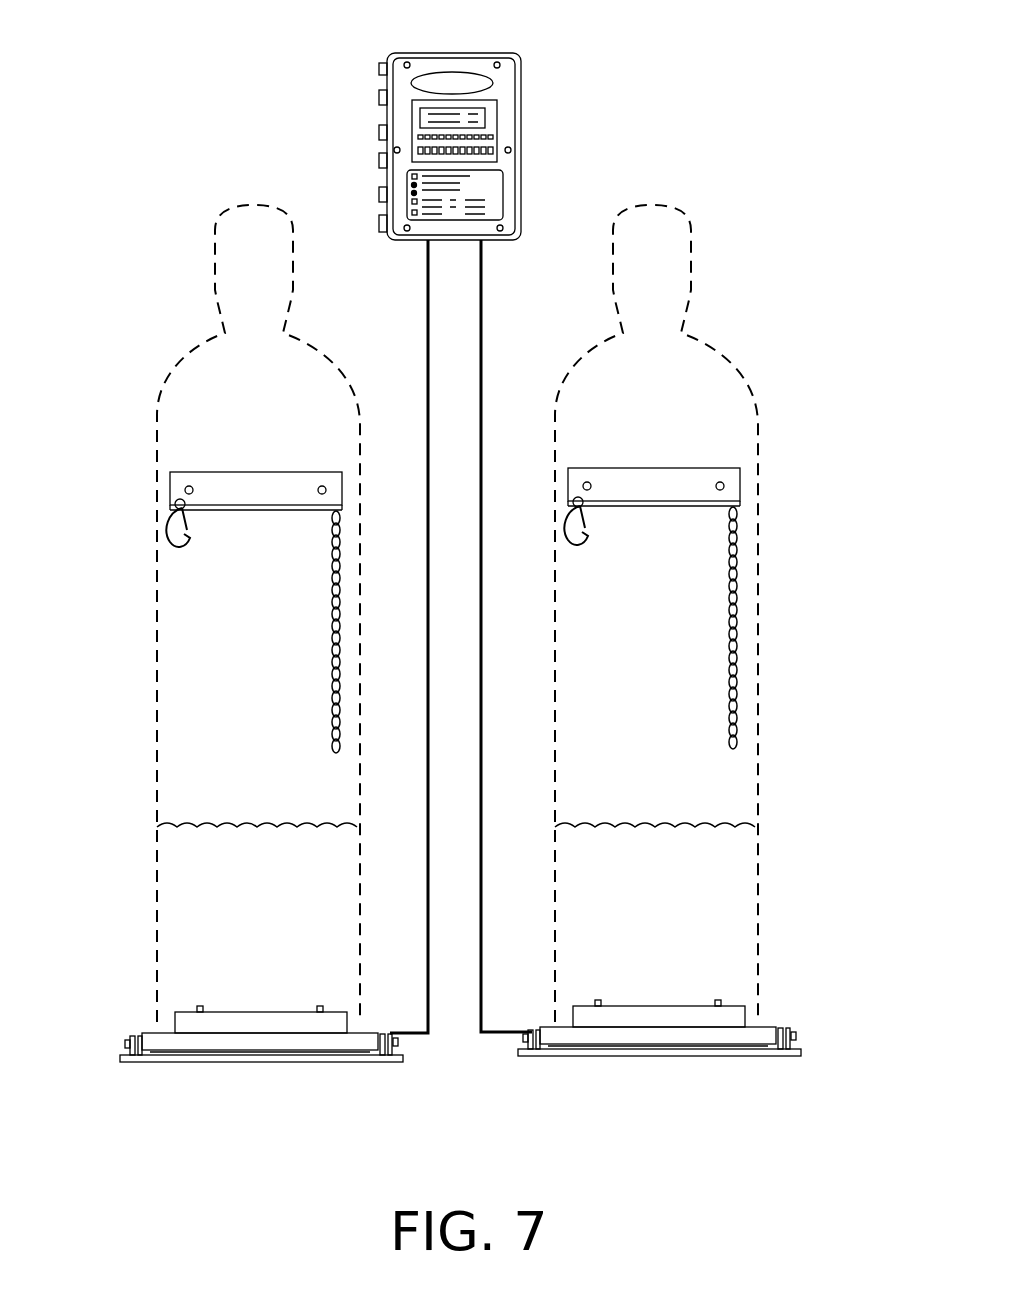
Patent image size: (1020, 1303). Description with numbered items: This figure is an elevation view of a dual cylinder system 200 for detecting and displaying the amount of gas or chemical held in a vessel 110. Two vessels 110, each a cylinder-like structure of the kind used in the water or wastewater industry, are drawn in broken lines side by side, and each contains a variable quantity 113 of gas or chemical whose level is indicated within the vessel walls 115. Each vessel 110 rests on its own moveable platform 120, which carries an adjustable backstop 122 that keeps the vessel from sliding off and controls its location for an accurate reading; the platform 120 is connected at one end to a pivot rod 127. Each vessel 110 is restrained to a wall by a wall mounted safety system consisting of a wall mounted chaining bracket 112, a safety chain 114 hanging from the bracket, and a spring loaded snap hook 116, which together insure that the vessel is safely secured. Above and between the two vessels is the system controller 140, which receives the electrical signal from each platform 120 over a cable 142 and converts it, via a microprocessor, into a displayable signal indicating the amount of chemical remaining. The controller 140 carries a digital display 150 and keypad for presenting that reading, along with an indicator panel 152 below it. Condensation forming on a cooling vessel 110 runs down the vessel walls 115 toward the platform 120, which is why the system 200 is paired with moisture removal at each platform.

The dual cylinder system 200 is at (785, 180).
The system controller 140 is at (538, 67).
The digital display 150 is at (420, 118).
The indicator panel 152 is at (503, 200).
The cable 142 is at (428, 313).
The vessel 110 is at (163, 372).
The wall mounted chaining bracket 112 is at (258, 468).
The spring loaded snap hook 116 is at (195, 528).
The safety chain 114 is at (332, 752).
The vessel walls 115 is at (155, 742).
The variable quantity 113 is at (293, 893).
The moveable platform 120 is at (790, 1031).
The adjustable backstop 122 is at (645, 1005).
The pivot rod 127 is at (393, 1062).